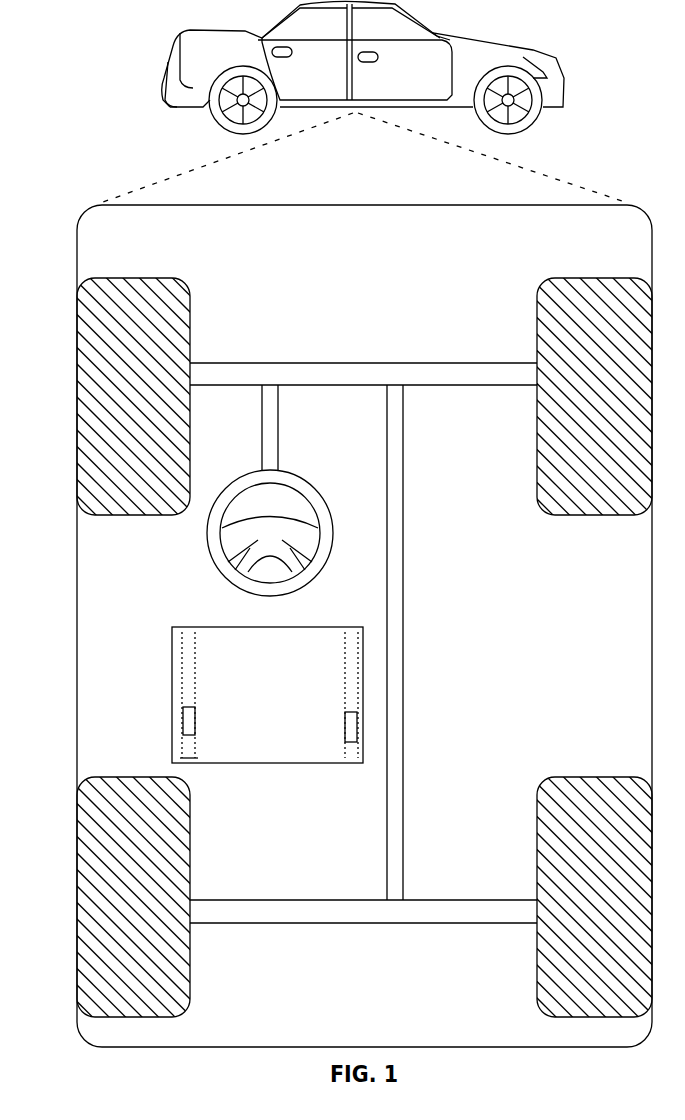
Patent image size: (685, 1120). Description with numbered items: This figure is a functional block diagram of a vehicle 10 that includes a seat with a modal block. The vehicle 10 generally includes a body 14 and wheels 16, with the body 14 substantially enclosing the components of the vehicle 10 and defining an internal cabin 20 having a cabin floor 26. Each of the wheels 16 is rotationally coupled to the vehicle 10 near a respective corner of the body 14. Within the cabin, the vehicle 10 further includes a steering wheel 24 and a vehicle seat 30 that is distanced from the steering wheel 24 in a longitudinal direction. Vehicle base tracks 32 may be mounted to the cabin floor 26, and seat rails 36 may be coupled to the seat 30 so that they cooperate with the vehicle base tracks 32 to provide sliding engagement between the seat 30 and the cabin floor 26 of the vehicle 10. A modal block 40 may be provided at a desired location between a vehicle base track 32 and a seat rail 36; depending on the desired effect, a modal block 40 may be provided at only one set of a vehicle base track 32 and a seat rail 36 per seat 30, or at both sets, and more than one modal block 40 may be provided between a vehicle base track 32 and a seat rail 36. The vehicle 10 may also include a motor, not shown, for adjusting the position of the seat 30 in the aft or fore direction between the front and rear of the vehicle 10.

The vehicle 10 is at (163, 78).
The body 14 is at (75, 650).
The wheels 16 is at (135, 290).
The internal cabin 20 is at (450, 661).
The steering wheel 24 is at (300, 476).
The cabin floor 26 is at (275, 855).
The vehicle seat 30 is at (256, 706).
The vehicle base tracks 32 is at (196, 748).
The seat rails 36 is at (180, 747).
The modal block 40 is at (183, 722).